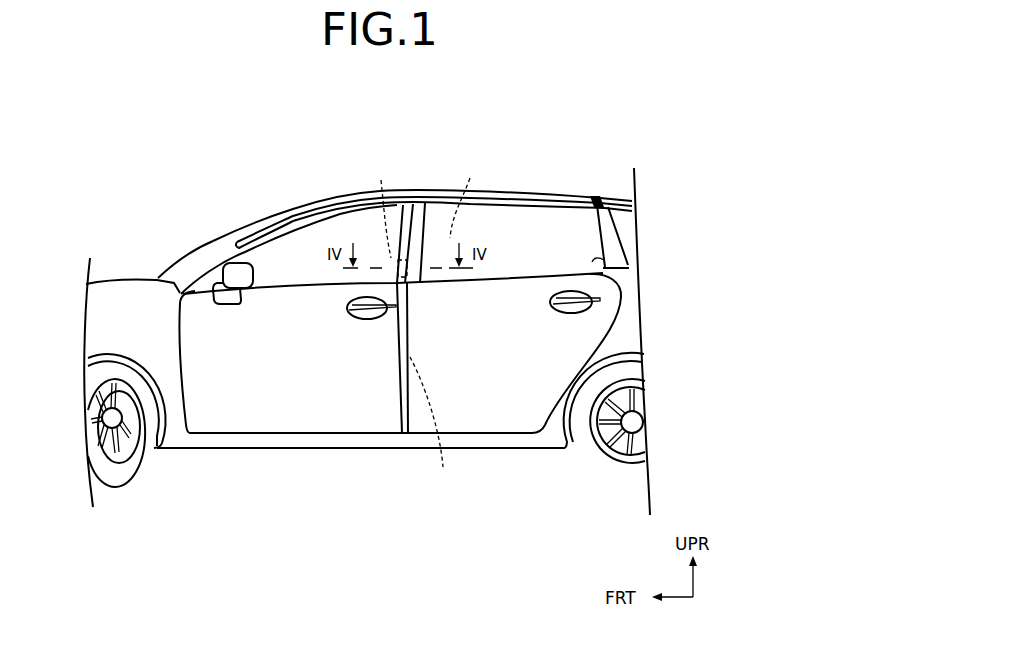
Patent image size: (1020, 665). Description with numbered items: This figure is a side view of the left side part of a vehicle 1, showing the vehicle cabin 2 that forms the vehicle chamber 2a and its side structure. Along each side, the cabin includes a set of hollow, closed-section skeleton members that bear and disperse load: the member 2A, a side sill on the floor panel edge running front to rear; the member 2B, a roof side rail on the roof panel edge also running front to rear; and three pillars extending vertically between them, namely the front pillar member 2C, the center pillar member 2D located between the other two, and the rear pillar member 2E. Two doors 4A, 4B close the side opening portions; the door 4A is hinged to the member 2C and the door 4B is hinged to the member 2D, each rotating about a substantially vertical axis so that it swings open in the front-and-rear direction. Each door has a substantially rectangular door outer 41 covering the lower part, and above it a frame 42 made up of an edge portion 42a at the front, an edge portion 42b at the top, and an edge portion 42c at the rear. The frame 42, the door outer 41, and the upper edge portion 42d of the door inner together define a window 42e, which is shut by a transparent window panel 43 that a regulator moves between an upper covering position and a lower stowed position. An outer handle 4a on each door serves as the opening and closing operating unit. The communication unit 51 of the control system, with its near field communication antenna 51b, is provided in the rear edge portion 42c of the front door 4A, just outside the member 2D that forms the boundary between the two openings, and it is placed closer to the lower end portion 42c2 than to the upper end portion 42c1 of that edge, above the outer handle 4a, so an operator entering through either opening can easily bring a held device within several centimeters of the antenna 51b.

The vehicle 1 is at (364, 307).
The vehicle cabin 2 is at (585, 165).
The member (lower side member, rocker, side sill) 2A is at (325, 443).
The member (upper side member, roof side rail) 2B is at (547, 196).
The member (front side member, front pillar, A pillar) 2C is at (180, 291).
The member (middle side member, center pillar, B pillar) 2D is at (433, 420).
The member (rear side member, rear pillar, C pillar) 2E is at (626, 328).
The vehicle cabin (vehicle chamber) 2a is at (469, 197).
The door 4A is at (243, 440).
The door 4B is at (491, 440).
The outer handle 4a is at (372, 312).
The door outer 41 is at (207, 416).
The frame 42 is at (294, 207).
The edge portion (front edge portion) 42a is at (243, 245).
The edge portion (upper edge portion) 42b is at (336, 197).
The edge portion (rear edge portion) 42c is at (404, 232).
The upper end portion 42c1 is at (421, 238).
The lower end portion 42c2 is at (402, 287).
The upper edge portion (end portion) 42d is at (290, 293).
The window (opening portion) 42e is at (356, 199).
The window panel (window glass) 43 is at (279, 247).
The communication unit 51 is at (385, 207).
The antenna 51b is at (385, 207).